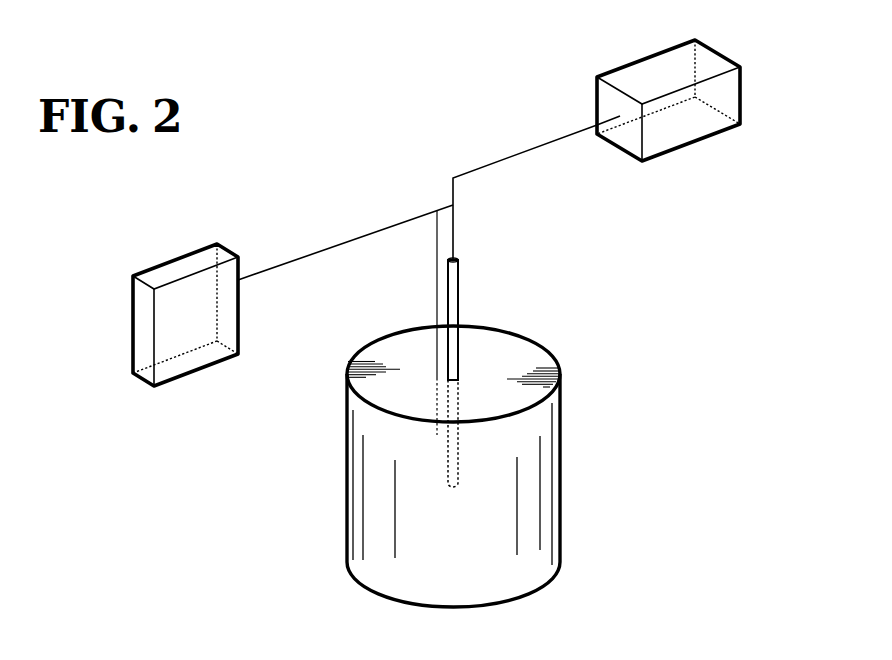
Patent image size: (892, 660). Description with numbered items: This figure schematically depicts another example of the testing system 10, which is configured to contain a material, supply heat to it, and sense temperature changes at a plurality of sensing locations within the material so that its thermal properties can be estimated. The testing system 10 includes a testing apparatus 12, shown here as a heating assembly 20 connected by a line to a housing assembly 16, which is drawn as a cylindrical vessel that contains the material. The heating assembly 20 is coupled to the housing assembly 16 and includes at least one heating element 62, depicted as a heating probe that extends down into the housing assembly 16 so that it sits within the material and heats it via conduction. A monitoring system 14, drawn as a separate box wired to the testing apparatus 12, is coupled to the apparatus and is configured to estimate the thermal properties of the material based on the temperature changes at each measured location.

The testing system 10 is at (335, 120).
The testing apparatus 12 is at (505, 136).
The monitoring system 14 is at (187, 218).
The housing assembly 16 is at (555, 330).
The heating assembly 20 is at (662, 75).
The heating element 62 is at (460, 295).